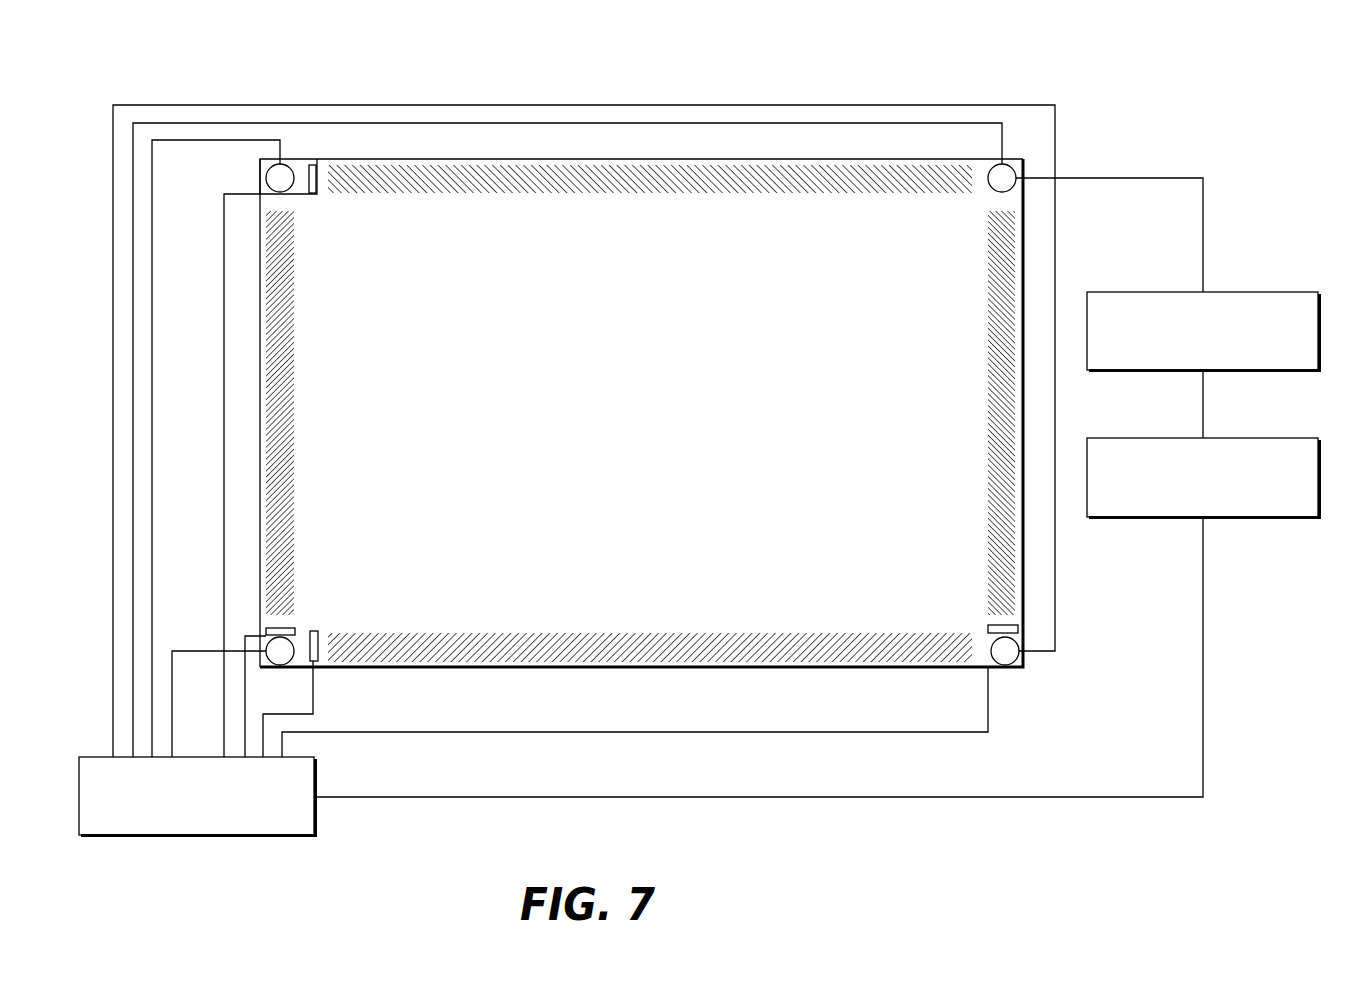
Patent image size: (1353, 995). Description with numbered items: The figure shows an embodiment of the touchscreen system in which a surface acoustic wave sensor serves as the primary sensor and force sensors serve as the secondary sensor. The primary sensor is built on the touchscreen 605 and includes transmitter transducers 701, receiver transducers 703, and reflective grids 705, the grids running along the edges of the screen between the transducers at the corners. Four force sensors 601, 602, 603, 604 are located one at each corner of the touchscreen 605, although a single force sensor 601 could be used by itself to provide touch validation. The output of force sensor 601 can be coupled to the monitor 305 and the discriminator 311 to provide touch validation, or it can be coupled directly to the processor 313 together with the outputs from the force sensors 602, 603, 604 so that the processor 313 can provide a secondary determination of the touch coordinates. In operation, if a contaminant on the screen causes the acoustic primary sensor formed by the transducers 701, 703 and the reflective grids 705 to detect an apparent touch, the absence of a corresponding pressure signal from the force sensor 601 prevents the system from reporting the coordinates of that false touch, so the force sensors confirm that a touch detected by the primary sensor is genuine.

The monitor 305 is at (1233, 292).
The discriminator 311 is at (1233, 438).
The processor 313 is at (316, 776).
The force sensor 601 is at (1013, 170).
The force sensor 602 is at (266, 176).
The force sensor 603 is at (290, 640).
The force sensor 604 is at (1010, 666).
The touchscreen 605 is at (623, 434).
The transmitter transducer 701 is at (313, 162).
The receiver transducer 703 is at (316, 662).
The reflective grid 705 is at (617, 193).